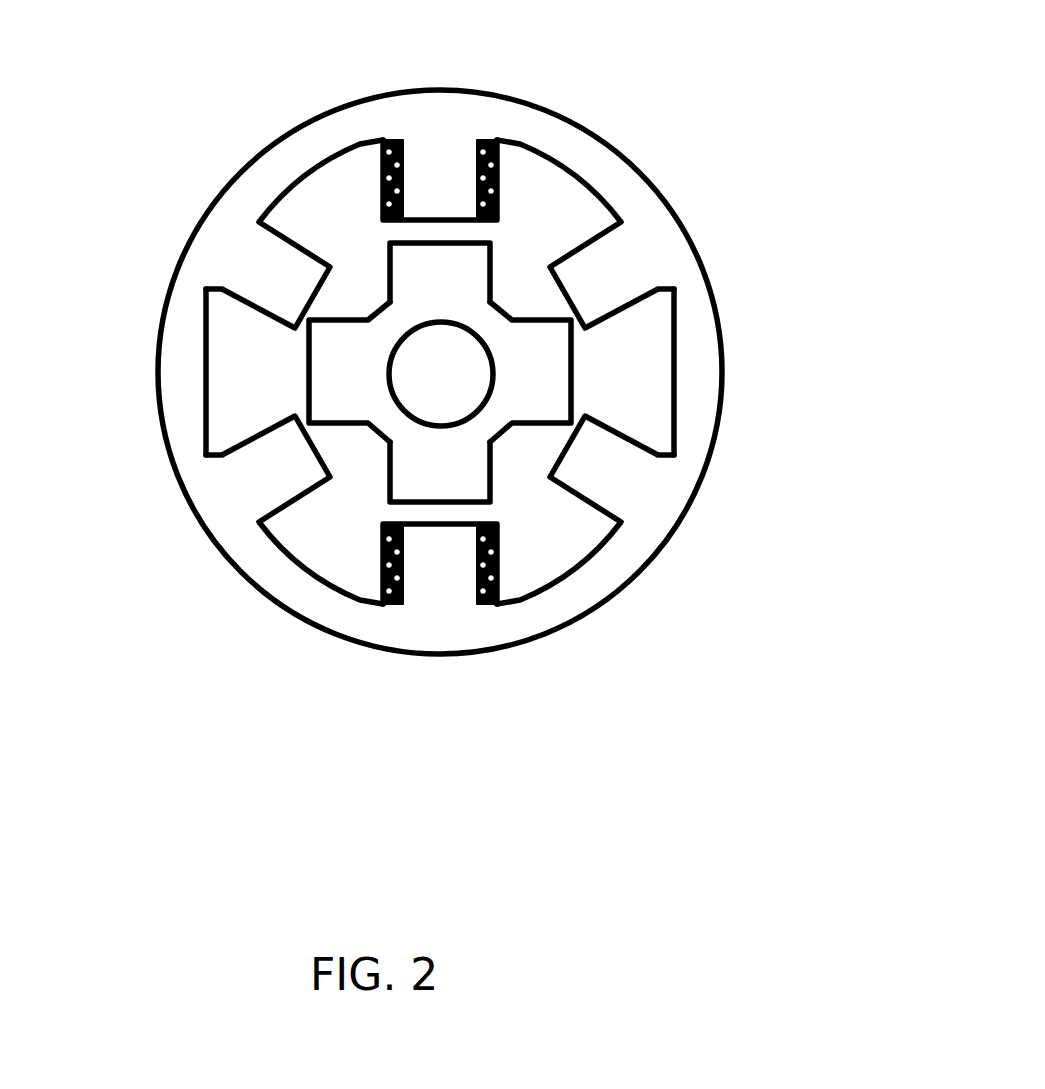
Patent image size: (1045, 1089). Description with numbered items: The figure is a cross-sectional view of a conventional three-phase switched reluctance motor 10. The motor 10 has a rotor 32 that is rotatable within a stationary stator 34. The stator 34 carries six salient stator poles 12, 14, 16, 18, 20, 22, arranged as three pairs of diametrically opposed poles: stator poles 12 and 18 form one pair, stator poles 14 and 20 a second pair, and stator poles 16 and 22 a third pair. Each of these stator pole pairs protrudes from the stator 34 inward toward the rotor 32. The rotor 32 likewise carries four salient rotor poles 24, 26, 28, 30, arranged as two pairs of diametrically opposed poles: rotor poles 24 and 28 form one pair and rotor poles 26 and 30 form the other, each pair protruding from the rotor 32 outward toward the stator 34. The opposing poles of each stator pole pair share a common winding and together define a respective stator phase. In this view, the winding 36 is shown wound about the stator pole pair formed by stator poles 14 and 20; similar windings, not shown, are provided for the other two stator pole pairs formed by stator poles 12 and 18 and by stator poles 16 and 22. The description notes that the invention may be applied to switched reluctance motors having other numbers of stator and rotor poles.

The switched reluctance motor 10 is at (472, 439).
The stator pole 12 is at (257, 263).
The stator pole 14 is at (448, 150).
The stator pole 16 is at (637, 257).
The stator pole 18 is at (623, 482).
The stator pole 20 is at (437, 590).
The stator pole 22 is at (260, 485).
The rotor pole 24 is at (352, 385).
The rotor pole 26 is at (427, 270).
The rotor pole 28 is at (540, 365).
The rotor pole 30 is at (463, 477).
The rotor 32 is at (587, 390).
The stator 34 is at (620, 182).
The winding 36 is at (523, 147).